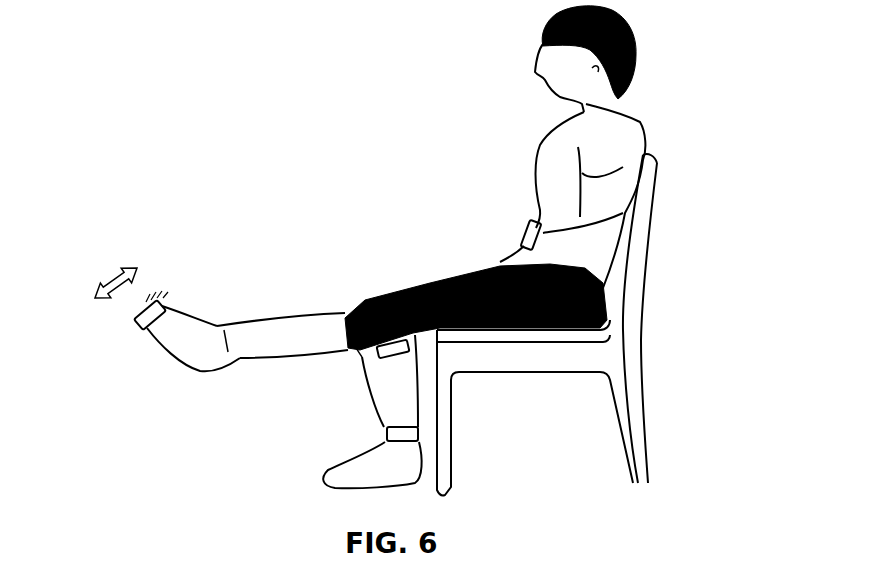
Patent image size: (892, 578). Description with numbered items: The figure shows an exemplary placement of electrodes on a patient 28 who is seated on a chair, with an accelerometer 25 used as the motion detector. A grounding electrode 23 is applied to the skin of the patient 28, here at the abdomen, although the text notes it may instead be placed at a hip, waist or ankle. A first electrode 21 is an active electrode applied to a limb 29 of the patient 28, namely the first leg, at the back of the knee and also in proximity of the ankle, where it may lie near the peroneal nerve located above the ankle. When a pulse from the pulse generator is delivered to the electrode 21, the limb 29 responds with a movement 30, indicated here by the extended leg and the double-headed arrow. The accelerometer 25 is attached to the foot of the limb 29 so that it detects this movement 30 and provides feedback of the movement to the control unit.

The first electrode 21 is at (398, 359).
The grounding electrode 23 is at (518, 228).
The accelerometer 25 is at (133, 325).
The patient 28 is at (645, 62).
The limb 29 is at (285, 318).
The movement 30 is at (98, 250).